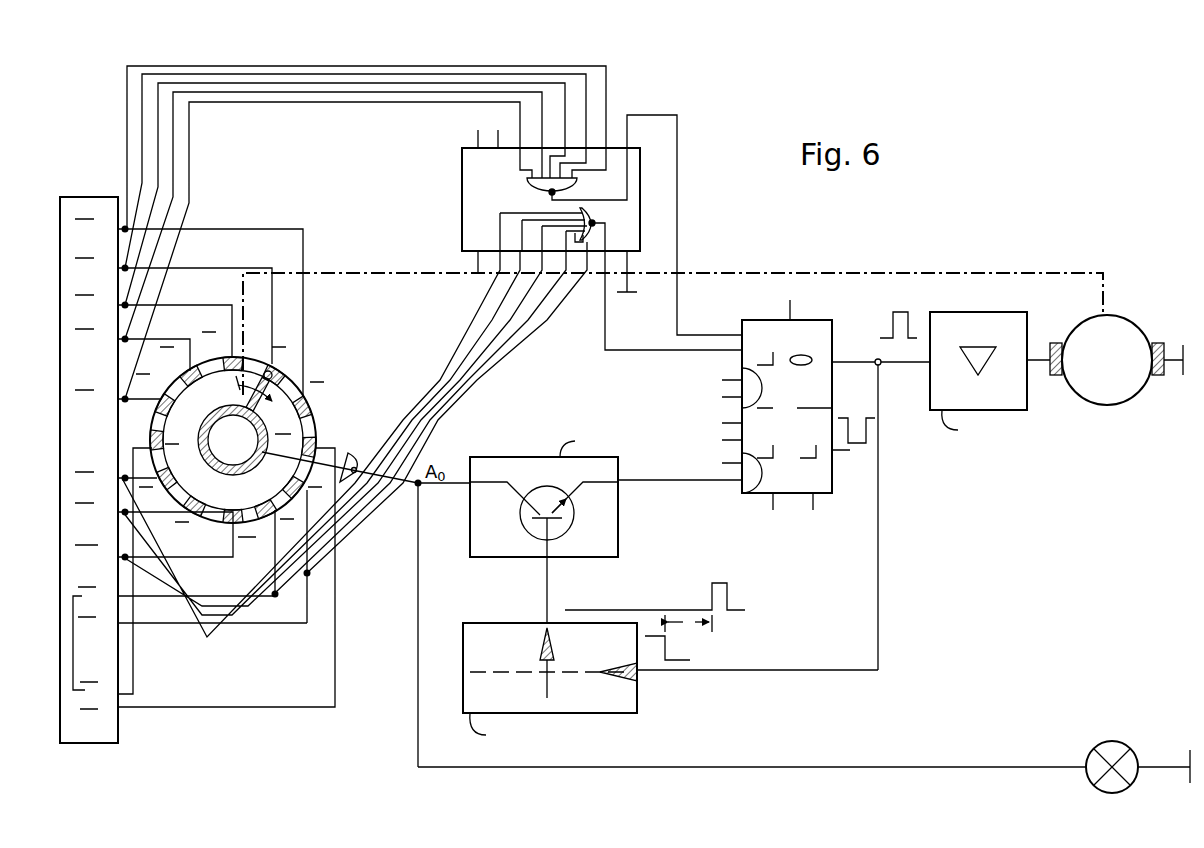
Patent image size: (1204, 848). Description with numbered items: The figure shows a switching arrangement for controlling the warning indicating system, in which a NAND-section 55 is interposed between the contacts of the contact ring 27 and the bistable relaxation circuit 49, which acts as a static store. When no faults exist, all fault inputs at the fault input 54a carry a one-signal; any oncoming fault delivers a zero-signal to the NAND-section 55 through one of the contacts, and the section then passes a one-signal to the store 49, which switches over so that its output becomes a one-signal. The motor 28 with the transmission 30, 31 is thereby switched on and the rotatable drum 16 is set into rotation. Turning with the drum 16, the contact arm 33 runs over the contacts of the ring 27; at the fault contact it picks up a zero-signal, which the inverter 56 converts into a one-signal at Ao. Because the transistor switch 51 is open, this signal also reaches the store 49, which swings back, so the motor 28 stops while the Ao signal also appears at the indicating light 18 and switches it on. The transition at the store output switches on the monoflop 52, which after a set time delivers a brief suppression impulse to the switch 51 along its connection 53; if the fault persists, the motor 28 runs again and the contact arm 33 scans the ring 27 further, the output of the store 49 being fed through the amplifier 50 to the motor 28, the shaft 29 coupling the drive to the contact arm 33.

The fault input 54a is at (97, 199).
The NAND-section 55 is at (464, 181).
The contact ring 27 is at (324, 414).
The contact arm 33 is at (262, 372).
The inverter 56 is at (360, 462).
The rotatable drum 16 is at (425, 275).
The shaft 29 is at (673, 334).
The transmission 30 is at (673, 334).
The transmission 31 is at (673, 334).
The bistable relaxation circuit 49 is at (756, 329).
The amplifier 50 is at (951, 326).
The motor 28 is at (1086, 336).
The transistor switch 51 is at (547, 457).
The monoflop 52 is at (637, 702).
The output line 53 is at (862, 767).
The indicating light 18 is at (1112, 752).